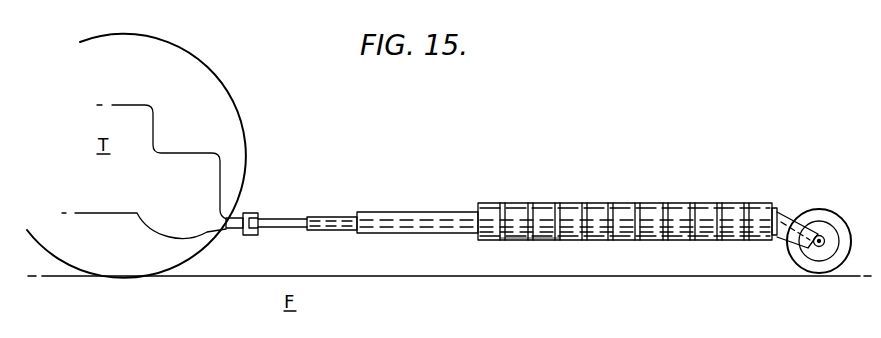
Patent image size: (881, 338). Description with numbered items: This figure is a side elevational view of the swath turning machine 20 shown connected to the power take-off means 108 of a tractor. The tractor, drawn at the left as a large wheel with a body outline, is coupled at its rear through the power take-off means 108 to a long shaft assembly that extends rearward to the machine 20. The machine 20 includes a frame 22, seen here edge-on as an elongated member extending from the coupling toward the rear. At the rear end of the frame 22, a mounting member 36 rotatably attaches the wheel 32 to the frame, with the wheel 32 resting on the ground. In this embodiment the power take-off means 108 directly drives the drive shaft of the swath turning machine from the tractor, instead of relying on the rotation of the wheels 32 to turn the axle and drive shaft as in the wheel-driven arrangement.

The power take-off means 108 is at (279, 213).
The machine 20 is at (641, 193).
The frame 22 is at (515, 240).
The mounting member 36 is at (804, 230).
The wheel 32 is at (846, 238).